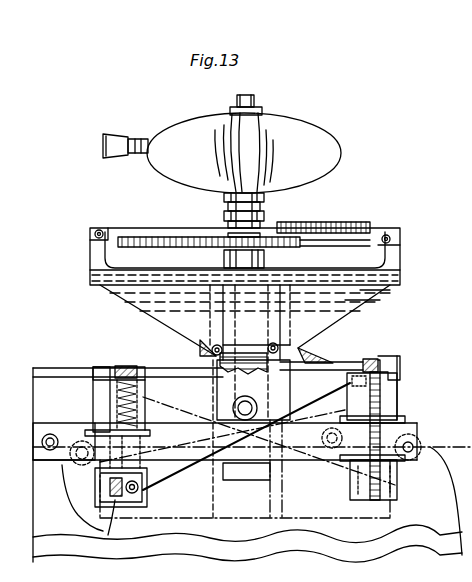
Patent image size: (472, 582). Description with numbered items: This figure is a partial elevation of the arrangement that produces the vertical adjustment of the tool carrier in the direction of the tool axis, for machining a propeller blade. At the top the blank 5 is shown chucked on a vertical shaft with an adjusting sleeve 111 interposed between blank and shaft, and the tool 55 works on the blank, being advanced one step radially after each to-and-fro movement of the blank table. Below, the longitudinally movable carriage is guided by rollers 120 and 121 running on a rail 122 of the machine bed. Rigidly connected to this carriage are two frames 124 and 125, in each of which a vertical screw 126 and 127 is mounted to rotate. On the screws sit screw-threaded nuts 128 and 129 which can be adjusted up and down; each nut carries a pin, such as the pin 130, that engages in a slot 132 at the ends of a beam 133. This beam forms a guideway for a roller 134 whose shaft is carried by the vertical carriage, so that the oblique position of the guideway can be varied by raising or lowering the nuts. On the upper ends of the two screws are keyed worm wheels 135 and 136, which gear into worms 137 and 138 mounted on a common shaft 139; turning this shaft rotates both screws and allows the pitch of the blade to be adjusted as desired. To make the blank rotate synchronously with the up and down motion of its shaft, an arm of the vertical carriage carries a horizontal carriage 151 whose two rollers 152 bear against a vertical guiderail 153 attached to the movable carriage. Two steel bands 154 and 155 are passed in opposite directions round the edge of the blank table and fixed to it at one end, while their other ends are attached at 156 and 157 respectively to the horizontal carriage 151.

The blank 5 is at (311, 136).
The tool 55 is at (147, 157).
The adjusting sleeve 111 is at (266, 212).
The steel band 154 is at (188, 237).
The steel band 155 is at (314, 238).
The attachment point of band 154 156 is at (99, 230).
The attachment point of band 155 157 is at (387, 235).
The worm wheel 135 is at (108, 365).
The horizontal carriage 151 is at (158, 318).
The rollers 152 is at (211, 351).
The shaft 139 is at (43, 367).
The worm 137 is at (118, 366).
The roller 120 is at (50, 433).
The vertical guiderail 153 is at (231, 378).
The roller 134 is at (233, 408).
The worm wheel 136 is at (346, 362).
The worm 138 is at (373, 366).
The slot 132 is at (338, 388).
The screw-threaded nut 129 is at (397, 392).
The screw-threaded nut 128 is at (110, 485).
The frame 124 is at (108, 498).
The pin 130 is at (134, 494).
The vertical screw 126 is at (112, 510).
The rail 122 is at (62, 470).
The beam 133 is at (210, 472).
The frame 125 is at (350, 497).
The vertical screw 127 is at (373, 502).
The roller 121 is at (414, 461).